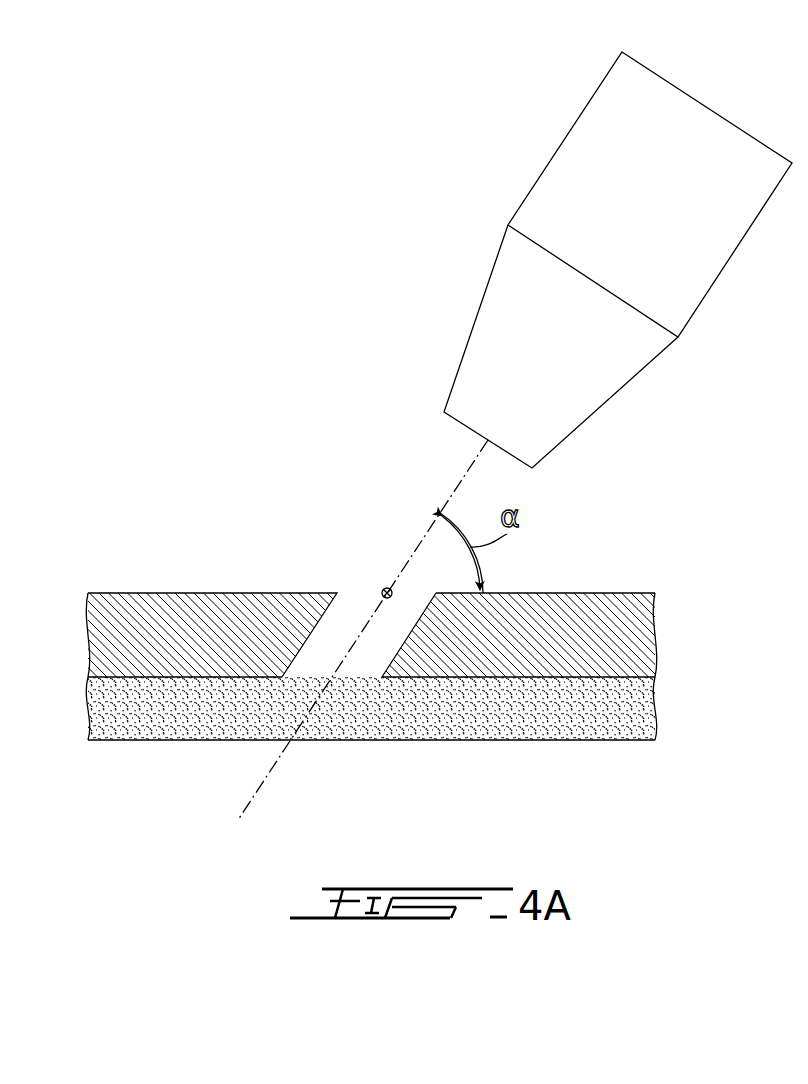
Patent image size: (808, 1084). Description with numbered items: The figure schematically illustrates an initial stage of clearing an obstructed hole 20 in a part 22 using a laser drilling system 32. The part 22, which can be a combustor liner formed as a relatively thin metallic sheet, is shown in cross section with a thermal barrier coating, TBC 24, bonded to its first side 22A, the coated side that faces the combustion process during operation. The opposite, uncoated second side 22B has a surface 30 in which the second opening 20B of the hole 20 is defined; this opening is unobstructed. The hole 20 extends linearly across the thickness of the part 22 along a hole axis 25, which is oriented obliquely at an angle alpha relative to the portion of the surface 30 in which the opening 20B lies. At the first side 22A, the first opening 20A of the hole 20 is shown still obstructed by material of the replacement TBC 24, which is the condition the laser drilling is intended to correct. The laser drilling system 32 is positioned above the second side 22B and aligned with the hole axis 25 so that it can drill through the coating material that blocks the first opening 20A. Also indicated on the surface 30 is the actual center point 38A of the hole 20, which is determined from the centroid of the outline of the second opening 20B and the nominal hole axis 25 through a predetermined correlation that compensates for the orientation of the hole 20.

The hole 20 is at (355, 610).
The first opening 20A is at (326, 760).
The second opening 20B is at (338, 590).
The part 22 is at (642, 637).
The first side 22A is at (569, 766).
The second side 22B is at (608, 578).
The TBC 24 is at (642, 713).
The hole axis 25 is at (472, 463).
The surface 30 is at (207, 592).
The laser drilling system 32 is at (556, 190).
The actual center point 38A is at (389, 588).